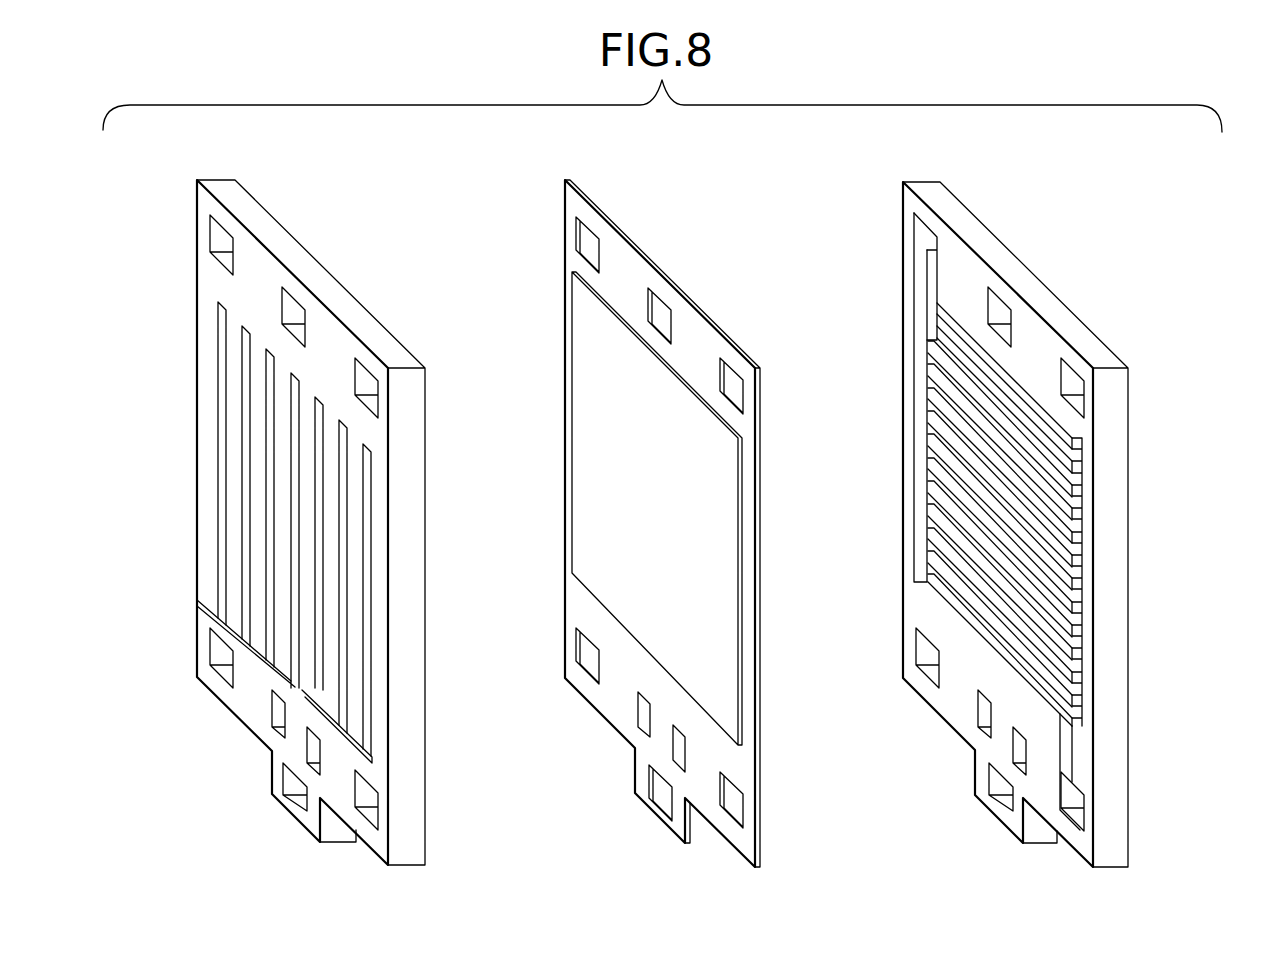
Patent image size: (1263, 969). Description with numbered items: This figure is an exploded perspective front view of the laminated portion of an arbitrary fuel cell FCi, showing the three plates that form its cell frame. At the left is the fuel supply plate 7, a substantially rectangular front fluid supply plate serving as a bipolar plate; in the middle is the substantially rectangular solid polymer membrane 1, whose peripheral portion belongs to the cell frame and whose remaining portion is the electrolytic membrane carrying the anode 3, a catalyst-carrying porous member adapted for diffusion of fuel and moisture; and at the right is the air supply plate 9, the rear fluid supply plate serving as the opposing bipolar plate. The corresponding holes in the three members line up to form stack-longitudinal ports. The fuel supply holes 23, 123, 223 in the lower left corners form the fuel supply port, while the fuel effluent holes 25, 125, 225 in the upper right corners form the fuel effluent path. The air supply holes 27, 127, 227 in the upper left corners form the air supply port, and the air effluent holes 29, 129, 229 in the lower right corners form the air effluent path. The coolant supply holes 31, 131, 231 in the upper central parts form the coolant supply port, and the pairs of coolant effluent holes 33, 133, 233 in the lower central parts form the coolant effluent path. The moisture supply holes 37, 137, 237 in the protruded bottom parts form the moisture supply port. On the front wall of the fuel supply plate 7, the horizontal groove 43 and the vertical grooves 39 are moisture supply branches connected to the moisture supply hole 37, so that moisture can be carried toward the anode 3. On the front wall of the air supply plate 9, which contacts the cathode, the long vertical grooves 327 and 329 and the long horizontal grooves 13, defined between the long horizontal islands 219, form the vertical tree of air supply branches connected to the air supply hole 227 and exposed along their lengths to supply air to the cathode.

The solid polymer membrane 1 is at (641, 233).
The anode 3 is at (560, 307).
The fuel supply plate 7 is at (282, 212).
The air supply plate 9 is at (986, 224).
The long horizontal grooves 13 is at (1078, 495).
The fuel supply hole 23 is at (218, 650).
The fuel effluent hole 25 is at (365, 382).
The air supply hole 27 is at (218, 240).
The air effluent hole 29 is at (372, 805).
The coolant supply hole 31 is at (293, 305).
The coolant effluent holes 33 is at (276, 715).
The moisture supply hole 37 is at (290, 782).
The vertical grooves 39 is at (222, 450).
The horizontal groove 43 is at (225, 628).
The fuel supply hole 123 is at (588, 652).
The fuel effluent hole 125 is at (733, 383).
The air supply hole 127 is at (588, 232).
The air effluent hole 129 is at (735, 815).
The coolant supply hole 131 is at (660, 308).
The coolant effluent holes 133 is at (645, 712).
The moisture supply hole 137 is at (662, 792).
The long horizontal islands 219 is at (1080, 578).
The fuel supply hole 223 is at (925, 660).
The fuel effluent hole 225 is at (1070, 385).
The air supply hole 227 is at (933, 243).
The air effluent hole 229 is at (1078, 815).
The coolant supply hole 231 is at (1000, 305).
The coolant effluent holes 233 is at (982, 722).
The moisture supply hole 237 is at (1000, 800).
The long vertical groove 327 is at (920, 413).
The long vertical groove 329 is at (1075, 745).
The fuel cell FCi is at (1117, 243).